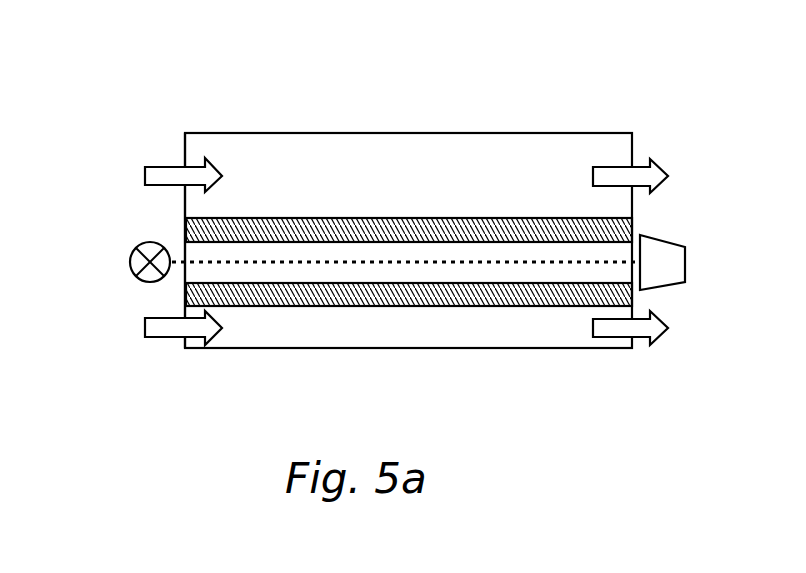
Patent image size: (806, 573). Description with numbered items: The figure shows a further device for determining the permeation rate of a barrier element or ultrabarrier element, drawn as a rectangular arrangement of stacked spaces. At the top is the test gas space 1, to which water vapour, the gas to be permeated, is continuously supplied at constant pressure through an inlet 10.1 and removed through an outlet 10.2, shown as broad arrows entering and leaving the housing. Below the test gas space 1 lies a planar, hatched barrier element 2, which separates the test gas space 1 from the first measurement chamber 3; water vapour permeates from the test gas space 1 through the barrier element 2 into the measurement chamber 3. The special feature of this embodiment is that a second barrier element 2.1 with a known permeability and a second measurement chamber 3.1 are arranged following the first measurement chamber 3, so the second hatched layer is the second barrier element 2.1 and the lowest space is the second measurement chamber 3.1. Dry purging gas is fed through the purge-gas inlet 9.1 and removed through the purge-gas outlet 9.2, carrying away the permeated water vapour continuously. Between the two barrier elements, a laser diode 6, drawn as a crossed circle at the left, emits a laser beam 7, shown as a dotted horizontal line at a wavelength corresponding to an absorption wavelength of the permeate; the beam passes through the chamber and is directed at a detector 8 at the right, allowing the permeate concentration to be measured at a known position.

The test gas space 1 is at (622, 143).
The barrier element 2 is at (632, 232).
The second barrier element 2.1 is at (632, 300).
The measurement chamber 3 is at (193, 249).
The second measurement chamber 3.1 is at (562, 352).
The laser diode 6 is at (131, 263).
The laser beam 7 is at (240, 261).
The detector 8 is at (668, 263).
The purge-gas inlet 9.1 is at (157, 331).
The purge-gas outlet 9.2 is at (663, 333).
The inlet 10.1 is at (153, 177).
The outlet 10.2 is at (643, 177).